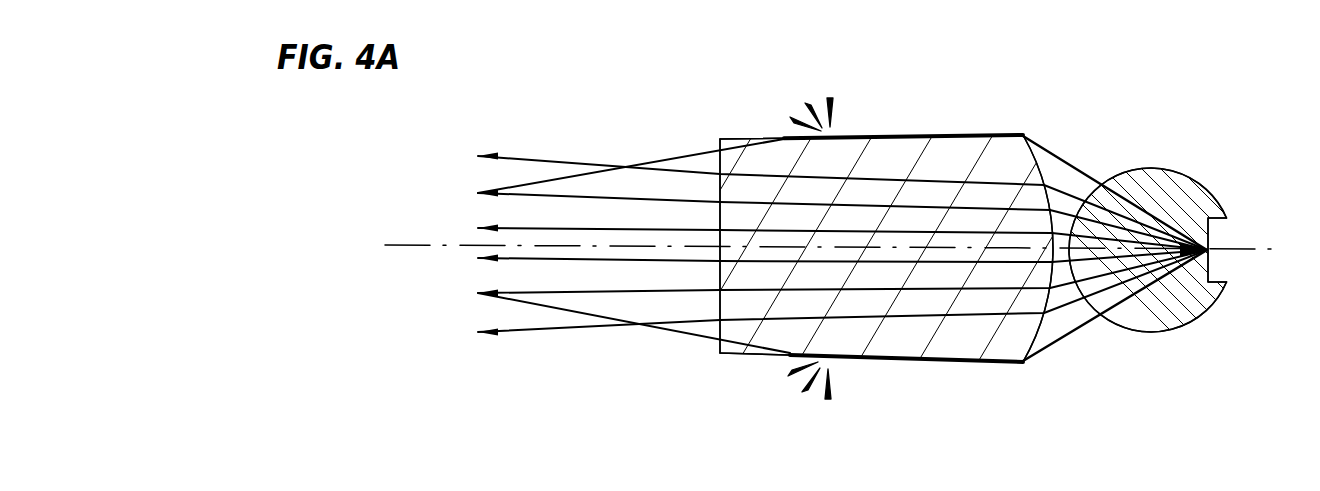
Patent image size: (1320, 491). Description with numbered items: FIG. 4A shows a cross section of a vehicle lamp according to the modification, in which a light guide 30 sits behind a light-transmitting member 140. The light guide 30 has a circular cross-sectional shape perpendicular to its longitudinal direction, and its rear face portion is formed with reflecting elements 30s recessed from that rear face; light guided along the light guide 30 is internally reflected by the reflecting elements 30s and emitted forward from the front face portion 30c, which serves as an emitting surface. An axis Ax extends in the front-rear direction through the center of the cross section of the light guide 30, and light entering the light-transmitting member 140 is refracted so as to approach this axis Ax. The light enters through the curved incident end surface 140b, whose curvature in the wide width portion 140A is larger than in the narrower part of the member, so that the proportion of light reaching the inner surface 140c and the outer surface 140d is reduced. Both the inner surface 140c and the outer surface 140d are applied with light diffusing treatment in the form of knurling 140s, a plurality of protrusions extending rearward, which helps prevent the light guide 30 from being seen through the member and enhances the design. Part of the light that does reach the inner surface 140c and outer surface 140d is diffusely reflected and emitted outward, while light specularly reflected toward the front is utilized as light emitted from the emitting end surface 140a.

The axis Ax is at (446, 242).
The light-transmitting member 140 is at (1010, 122).
The wide width portion 140A is at (810, 195).
The emitting end surface 140a is at (719, 293).
The incident end surface 140b is at (1048, 298).
The inner surface 140c is at (870, 136).
The outer surface 140d is at (872, 360).
The knurling 140s is at (933, 135).
The light guide 30 is at (1190, 162).
The front face portion 30c is at (1128, 167).
The reflecting elements 30s is at (1214, 266).